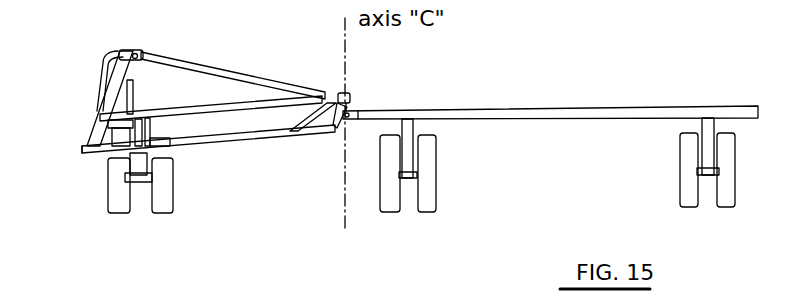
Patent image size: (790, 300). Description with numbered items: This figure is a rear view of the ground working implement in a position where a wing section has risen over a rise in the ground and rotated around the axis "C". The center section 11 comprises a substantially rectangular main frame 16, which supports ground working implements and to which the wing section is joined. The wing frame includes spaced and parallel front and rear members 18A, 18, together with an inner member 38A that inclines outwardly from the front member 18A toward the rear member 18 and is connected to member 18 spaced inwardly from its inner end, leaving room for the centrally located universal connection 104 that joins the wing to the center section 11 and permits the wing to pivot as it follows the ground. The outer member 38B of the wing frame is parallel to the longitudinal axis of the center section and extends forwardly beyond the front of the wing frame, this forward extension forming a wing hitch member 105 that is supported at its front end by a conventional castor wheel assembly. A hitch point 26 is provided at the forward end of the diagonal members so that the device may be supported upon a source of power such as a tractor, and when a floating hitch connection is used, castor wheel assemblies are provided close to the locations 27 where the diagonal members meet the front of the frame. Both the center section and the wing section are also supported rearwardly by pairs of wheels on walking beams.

The center section 11 is at (550, 142).
The main frame 16 is at (567, 112).
The frame member 18 is at (207, 140).
The front member 18A is at (227, 102).
The hitch point 26 is at (126, 94).
The castor wheel locations 27 is at (160, 196).
The inner member 38A is at (303, 118).
The outer member 38B is at (100, 124).
The universal connection 104 is at (353, 107).
The wing hitch member 105 is at (118, 88).